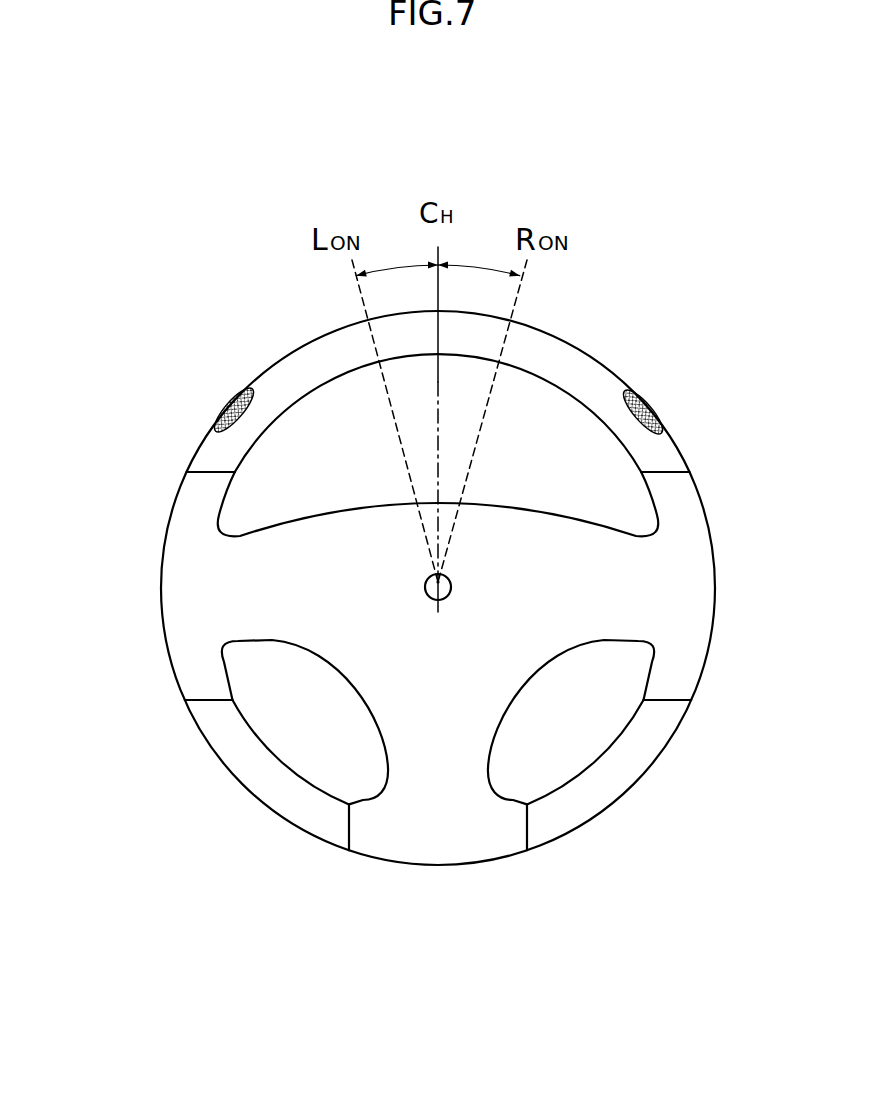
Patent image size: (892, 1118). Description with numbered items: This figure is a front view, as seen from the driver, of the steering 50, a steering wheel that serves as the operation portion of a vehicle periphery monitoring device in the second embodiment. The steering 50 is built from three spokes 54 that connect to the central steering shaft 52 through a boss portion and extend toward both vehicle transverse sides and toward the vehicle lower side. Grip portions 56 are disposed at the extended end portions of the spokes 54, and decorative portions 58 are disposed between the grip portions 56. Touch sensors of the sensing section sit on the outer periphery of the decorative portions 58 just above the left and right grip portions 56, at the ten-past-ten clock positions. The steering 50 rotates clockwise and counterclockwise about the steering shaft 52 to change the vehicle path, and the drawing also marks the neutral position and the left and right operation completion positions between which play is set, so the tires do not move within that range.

The steering 50 is at (575, 326).
The steering shaft 52 is at (450, 598).
The spokes 54 is at (308, 545).
The grip portions 56 is at (172, 613).
The decorative portions 58 is at (313, 362).